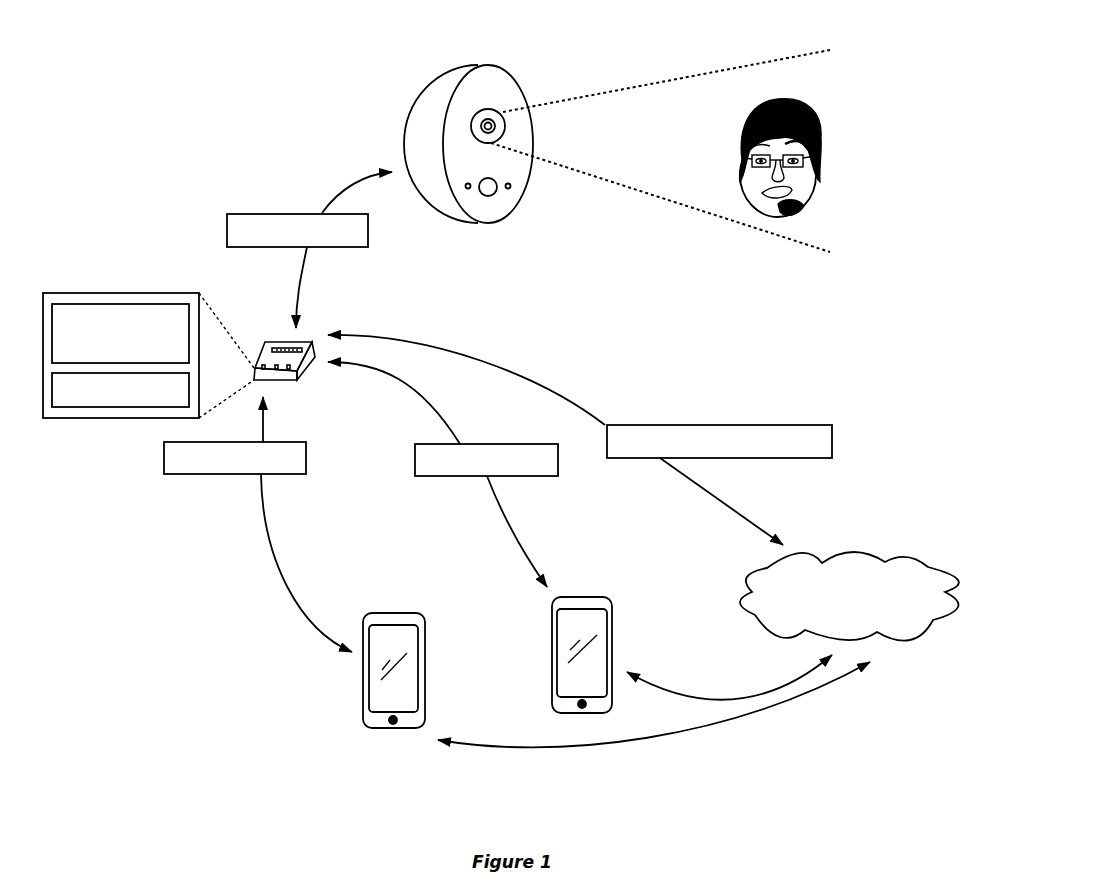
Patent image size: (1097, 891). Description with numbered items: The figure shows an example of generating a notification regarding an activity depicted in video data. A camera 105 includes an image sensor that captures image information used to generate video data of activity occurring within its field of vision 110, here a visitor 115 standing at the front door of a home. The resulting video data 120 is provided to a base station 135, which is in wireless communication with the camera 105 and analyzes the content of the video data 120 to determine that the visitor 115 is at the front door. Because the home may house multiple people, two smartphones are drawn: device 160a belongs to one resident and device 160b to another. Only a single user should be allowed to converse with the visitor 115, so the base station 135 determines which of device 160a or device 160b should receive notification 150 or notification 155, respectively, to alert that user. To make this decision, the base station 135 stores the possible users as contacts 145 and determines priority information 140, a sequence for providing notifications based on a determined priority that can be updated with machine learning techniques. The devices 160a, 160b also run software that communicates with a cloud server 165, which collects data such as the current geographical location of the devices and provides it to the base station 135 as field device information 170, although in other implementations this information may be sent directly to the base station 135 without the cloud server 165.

The camera 105 is at (449, 68).
The field of vision 110 is at (806, 50).
The visitor 115 is at (832, 108).
The video data 120 is at (297, 230).
The base station 135 is at (255, 368).
The priority information 140 is at (120, 333).
The contacts 145 is at (120, 390).
The notification 150 is at (235, 458).
The notification 155 is at (486, 460).
The device 160a is at (386, 613).
The device 160b is at (575, 597).
The cloud server 165 is at (849, 596).
The field device information 170 is at (719, 441).